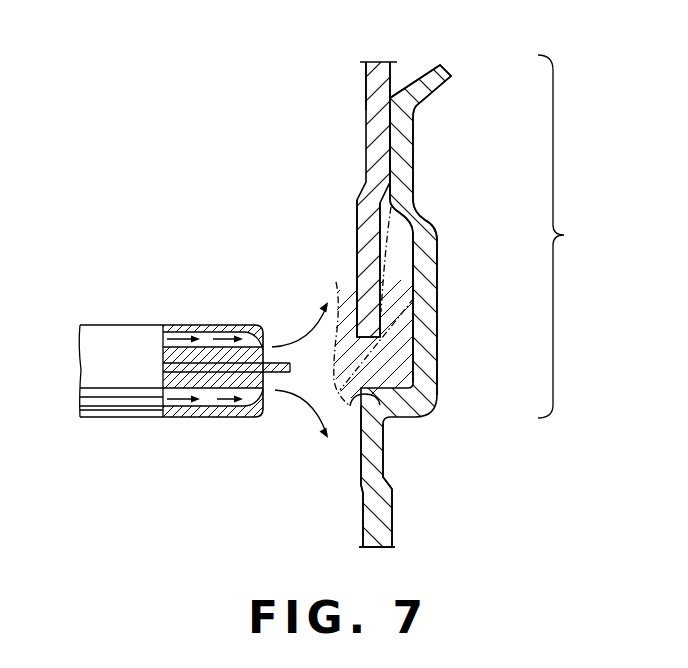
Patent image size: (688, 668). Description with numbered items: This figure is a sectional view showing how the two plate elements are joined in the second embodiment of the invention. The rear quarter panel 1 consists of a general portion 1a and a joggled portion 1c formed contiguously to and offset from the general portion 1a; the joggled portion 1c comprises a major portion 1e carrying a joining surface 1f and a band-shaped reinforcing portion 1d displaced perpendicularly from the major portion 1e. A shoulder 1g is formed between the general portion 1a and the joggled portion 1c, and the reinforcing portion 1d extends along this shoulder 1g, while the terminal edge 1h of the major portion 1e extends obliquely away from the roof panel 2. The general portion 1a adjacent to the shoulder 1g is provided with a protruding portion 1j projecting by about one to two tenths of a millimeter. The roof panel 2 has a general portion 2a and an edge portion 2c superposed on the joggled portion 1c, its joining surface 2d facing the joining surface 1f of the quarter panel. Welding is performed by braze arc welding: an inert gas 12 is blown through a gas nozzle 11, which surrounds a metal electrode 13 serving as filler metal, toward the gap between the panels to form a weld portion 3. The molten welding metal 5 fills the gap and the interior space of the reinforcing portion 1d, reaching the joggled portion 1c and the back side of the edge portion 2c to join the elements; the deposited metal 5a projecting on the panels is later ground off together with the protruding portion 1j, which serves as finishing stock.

The rear quarter panel 1 is at (447, 413).
The general portion 1a is at (383, 528).
The joggled portion 1c is at (570, 236).
The reinforcing portion 1d is at (433, 307).
The major portion 1e is at (405, 148).
The joining surface 1f is at (390, 160).
The shoulder 1g is at (356, 406).
The terminal edge 1h is at (443, 80).
The protruding portion 1j is at (360, 480).
The roof panel 2 is at (353, 91).
The general portion 2a is at (373, 62).
The edge portion 2c is at (368, 242).
The joining surface 2d is at (392, 123).
The weld portion 3 is at (303, 415).
The molten welding metal 5 is at (382, 367).
The deposited metal 5a is at (336, 284).
The gas nozzle 11 is at (170, 320).
The inert gas 12 is at (220, 327).
The metal electrode 13 is at (213, 363).